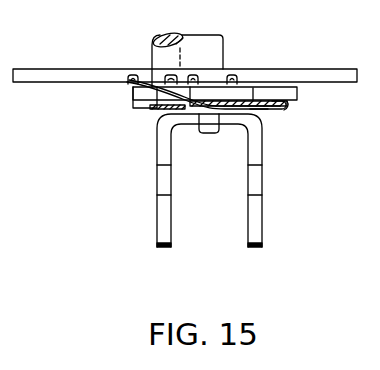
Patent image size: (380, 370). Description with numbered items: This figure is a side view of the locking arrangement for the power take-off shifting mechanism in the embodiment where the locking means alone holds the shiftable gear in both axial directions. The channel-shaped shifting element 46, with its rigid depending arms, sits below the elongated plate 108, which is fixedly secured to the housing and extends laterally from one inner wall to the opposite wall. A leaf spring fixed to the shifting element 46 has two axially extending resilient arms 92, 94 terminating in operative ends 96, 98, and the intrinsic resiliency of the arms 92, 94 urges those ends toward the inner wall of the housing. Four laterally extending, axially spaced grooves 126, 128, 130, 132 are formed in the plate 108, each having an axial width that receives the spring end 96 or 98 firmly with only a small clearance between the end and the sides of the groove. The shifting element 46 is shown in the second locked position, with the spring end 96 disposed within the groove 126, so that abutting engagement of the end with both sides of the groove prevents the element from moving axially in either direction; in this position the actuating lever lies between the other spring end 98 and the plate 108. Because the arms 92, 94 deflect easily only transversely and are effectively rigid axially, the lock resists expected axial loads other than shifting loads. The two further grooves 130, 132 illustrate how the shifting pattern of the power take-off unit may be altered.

The shifting element 46 is at (152, 133).
The resilient arm 92 is at (142, 102).
The resilient arm 94 is at (262, 112).
The operative end 96 is at (127, 85).
The operative end 98 is at (293, 107).
The elongated plate 108 is at (289, 72).
The groove 126 is at (133, 70).
The groove 128 is at (176, 30).
The groove 130 is at (200, 69).
The groove 132 is at (240, 82).